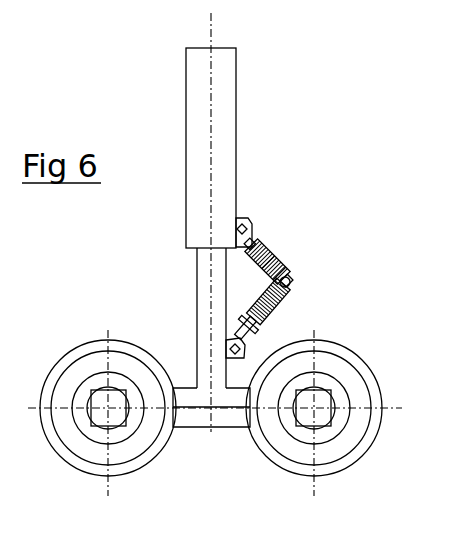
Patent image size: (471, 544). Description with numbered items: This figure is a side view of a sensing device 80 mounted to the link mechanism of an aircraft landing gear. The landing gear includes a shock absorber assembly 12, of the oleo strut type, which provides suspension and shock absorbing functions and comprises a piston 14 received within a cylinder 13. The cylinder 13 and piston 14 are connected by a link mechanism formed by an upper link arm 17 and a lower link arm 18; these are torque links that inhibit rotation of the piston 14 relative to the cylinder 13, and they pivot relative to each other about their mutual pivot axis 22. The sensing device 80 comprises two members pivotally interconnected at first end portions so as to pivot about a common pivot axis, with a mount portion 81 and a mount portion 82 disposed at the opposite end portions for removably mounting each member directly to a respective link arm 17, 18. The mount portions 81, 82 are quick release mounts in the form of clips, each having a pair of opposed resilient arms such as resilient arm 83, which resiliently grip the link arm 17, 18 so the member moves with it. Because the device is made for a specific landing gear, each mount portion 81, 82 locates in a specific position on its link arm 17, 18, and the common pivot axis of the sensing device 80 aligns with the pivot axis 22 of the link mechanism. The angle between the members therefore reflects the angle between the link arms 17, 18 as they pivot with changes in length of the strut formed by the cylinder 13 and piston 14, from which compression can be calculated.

The shock absorber assembly 12 is at (284, 68).
The cylinder 13 is at (198, 107).
The piston 14 is at (205, 273).
The upper link arm 17 is at (270, 248).
The lower link arm 18 is at (279, 310).
The pivot axis 22 is at (284, 285).
The sensing device 80 is at (287, 267).
The mount portion 81 is at (258, 235).
The mount portion 82 is at (246, 331).
The resilient arm 83 is at (237, 442).